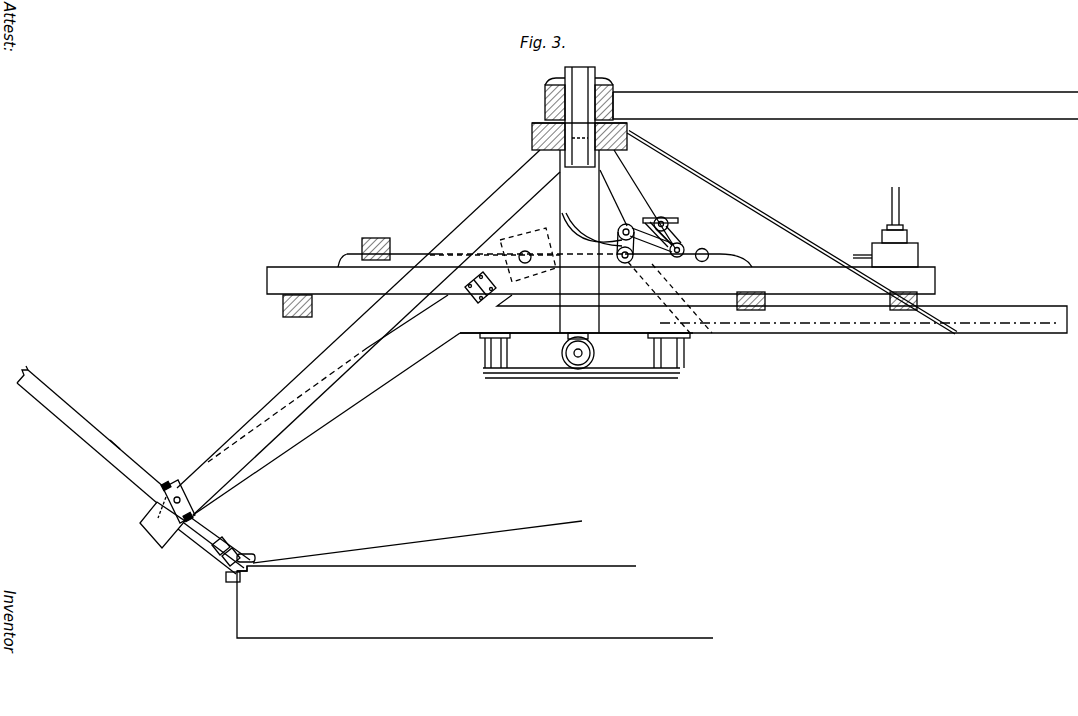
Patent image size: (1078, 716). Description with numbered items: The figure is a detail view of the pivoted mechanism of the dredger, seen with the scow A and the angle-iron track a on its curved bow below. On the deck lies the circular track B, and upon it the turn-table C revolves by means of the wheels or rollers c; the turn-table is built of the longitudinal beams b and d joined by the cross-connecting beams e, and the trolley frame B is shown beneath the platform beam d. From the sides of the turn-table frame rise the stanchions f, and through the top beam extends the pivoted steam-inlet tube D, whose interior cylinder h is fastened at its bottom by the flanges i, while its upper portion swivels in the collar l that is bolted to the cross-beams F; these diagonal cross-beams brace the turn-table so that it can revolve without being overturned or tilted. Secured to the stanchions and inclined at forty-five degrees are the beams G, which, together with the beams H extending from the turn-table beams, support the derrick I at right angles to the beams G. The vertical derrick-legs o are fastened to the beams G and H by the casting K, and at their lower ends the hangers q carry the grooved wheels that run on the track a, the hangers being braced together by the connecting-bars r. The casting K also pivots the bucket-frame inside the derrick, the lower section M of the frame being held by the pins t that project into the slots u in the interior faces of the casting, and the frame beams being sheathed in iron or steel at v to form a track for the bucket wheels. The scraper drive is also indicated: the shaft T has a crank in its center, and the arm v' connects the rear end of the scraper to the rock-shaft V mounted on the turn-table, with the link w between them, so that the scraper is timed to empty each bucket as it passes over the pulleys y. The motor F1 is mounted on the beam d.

The scow A is at (475, 602).
The circular track B is at (628, 374).
The turn-table C is at (545, 248).
The pivoted steam-inlet tube D is at (616, 93).
The cross-beams F is at (845, 105).
The motor / winch F1 is at (885, 227).
The inclined beams G is at (368, 332).
The beams H is at (326, 424).
The derrick I is at (116, 428).
The casting K is at (176, 493).
The lower section of bucket-frame M is at (528, 255).
The shaft T is at (666, 297).
The rock-shaft V is at (658, 218).
The track a is at (245, 570).
The longitudinal beam b is at (763, 314).
The wheels or rollers c is at (693, 346).
The longitudinal beams d is at (601, 280).
The cross-connecting beams e is at (390, 248).
The stanchions f is at (592, 223).
The interior cylinder h is at (580, 117).
The flanges i is at (627, 124).
The collar l is at (619, 105).
The vertical beams (derrick-legs) o is at (127, 463).
The hangers q is at (212, 565).
The connecting-bars r is at (254, 557).
The pins t is at (641, 198).
The slots u is at (506, 250).
The iron or steel sheathing v is at (617, 233).
The arm v' is at (666, 229).
The connecting link w is at (658, 246).
The pulleys y is at (512, 280).